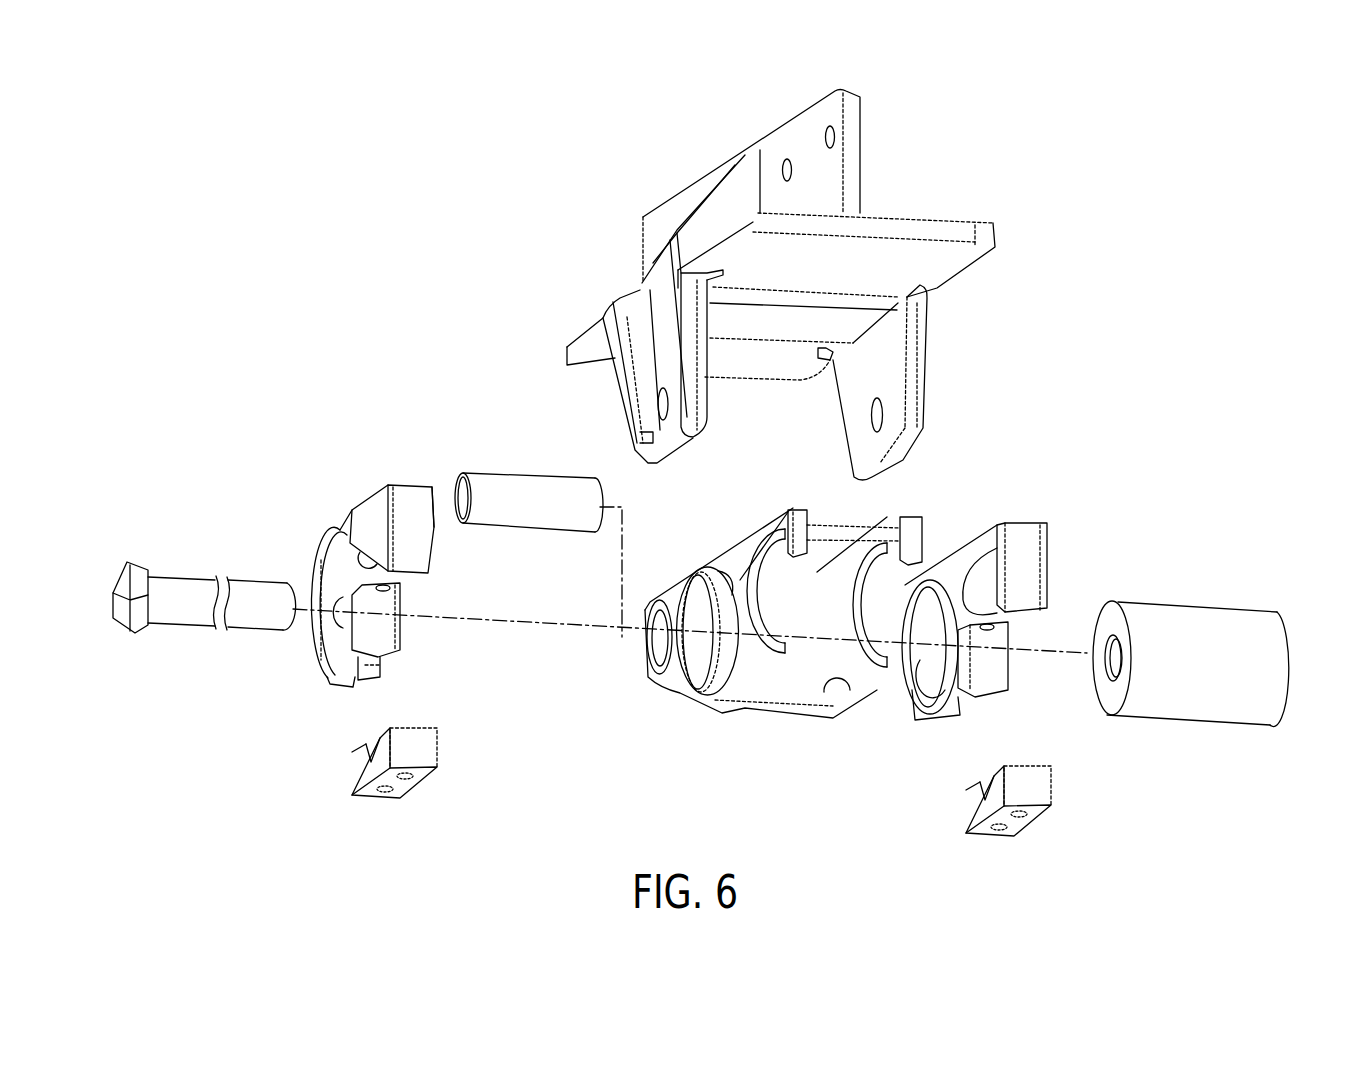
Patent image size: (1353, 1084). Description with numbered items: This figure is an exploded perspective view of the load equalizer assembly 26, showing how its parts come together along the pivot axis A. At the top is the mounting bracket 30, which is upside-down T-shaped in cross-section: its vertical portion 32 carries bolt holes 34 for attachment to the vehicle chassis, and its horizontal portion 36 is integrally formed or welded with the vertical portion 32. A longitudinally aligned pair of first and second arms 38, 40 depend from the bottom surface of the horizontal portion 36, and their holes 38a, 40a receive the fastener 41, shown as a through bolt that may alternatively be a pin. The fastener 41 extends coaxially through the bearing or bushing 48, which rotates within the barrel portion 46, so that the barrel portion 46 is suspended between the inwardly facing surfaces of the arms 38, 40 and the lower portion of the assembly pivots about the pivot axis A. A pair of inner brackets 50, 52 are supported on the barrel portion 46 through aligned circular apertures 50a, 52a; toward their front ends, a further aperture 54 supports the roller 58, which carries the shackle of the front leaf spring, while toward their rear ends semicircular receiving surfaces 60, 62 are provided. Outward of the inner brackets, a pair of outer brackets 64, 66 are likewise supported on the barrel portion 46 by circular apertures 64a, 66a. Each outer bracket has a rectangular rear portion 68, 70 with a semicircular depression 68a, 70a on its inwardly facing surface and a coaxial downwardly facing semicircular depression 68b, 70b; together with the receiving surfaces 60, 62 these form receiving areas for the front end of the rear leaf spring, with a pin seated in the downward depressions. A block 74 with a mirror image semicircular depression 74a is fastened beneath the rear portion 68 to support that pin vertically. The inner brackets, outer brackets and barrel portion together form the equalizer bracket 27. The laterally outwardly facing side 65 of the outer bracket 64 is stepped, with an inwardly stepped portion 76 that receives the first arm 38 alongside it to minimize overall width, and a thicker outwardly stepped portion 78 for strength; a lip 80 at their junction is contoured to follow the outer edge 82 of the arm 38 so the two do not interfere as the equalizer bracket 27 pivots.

The load equalizer assembly 26 is at (1035, 262).
The equalizer bracket 27 is at (1085, 753).
The mounting bracket 30 is at (778, 300).
The vertical portion 32 is at (806, 125).
The bolt holes 34 is at (828, 143).
The horizontal portion 36 is at (942, 232).
The first arm 38 is at (660, 430).
The hole 38a is at (655, 408).
The second arm 40 is at (918, 345).
The hole 40a is at (883, 417).
The fastener 41 is at (181, 622).
The barrel portion 46 is at (756, 628).
The bearing or bushing 48 is at (1197, 603).
The inner bracket 50 is at (665, 683).
The circular aperture 50a is at (716, 570).
The inner bracket 52 is at (860, 575).
The circular aperture 52a is at (837, 677).
The circular aperture 54 is at (658, 623).
The roller 58 is at (500, 470).
The semicircular receiving surface 60 is at (762, 598).
The semicircular receiving surface 62 is at (867, 608).
The outer bracket 64 is at (345, 545).
The circular aperture 64a is at (330, 640).
The laterally outwardly facing side 65 is at (306, 529).
The outer bracket 66 is at (992, 632).
The circular aperture 66a is at (943, 663).
The rectangular rear portion 68 is at (392, 504).
The semicircular depression 68a is at (432, 553).
The downwardly facing semicircular depression 68b is at (350, 570).
The rectangular rear portion 70 is at (1037, 559).
The semicircular depression 70a is at (993, 580).
The downwardly facing semicircular depression 70b is at (1010, 620).
The block 74 is at (383, 765).
The mirror image semicircular depression 74a is at (371, 751).
The inwardly stepped portion 76 is at (316, 584).
The outwardly stepped portion 78 is at (370, 515).
The lip 80 is at (335, 612).
The outer edge 82 is at (707, 400).
The pivot axis A is at (1053, 657).